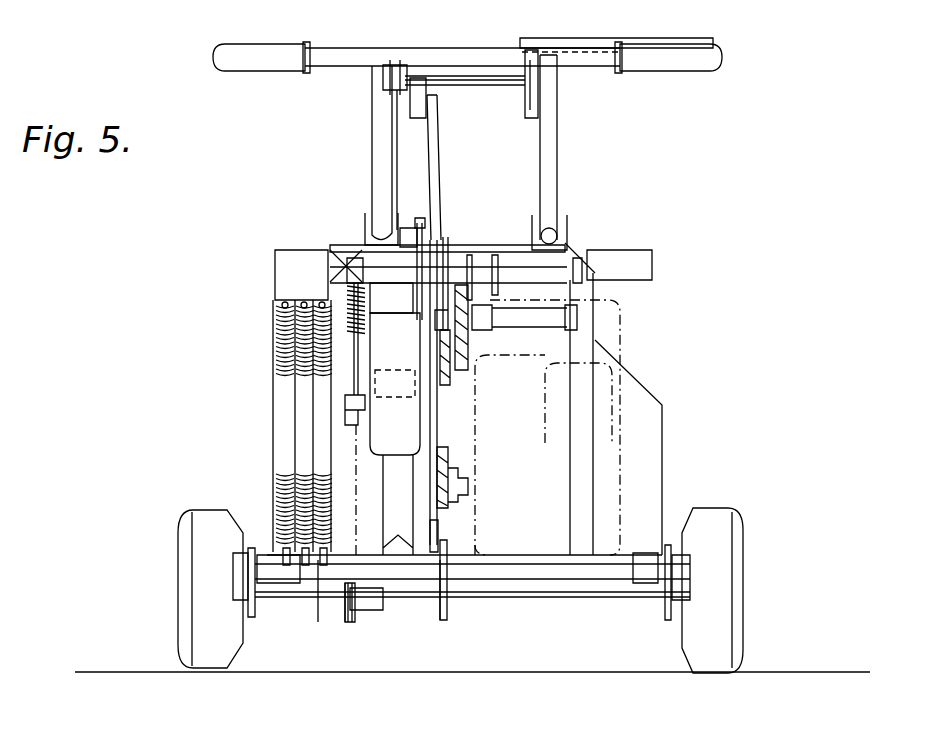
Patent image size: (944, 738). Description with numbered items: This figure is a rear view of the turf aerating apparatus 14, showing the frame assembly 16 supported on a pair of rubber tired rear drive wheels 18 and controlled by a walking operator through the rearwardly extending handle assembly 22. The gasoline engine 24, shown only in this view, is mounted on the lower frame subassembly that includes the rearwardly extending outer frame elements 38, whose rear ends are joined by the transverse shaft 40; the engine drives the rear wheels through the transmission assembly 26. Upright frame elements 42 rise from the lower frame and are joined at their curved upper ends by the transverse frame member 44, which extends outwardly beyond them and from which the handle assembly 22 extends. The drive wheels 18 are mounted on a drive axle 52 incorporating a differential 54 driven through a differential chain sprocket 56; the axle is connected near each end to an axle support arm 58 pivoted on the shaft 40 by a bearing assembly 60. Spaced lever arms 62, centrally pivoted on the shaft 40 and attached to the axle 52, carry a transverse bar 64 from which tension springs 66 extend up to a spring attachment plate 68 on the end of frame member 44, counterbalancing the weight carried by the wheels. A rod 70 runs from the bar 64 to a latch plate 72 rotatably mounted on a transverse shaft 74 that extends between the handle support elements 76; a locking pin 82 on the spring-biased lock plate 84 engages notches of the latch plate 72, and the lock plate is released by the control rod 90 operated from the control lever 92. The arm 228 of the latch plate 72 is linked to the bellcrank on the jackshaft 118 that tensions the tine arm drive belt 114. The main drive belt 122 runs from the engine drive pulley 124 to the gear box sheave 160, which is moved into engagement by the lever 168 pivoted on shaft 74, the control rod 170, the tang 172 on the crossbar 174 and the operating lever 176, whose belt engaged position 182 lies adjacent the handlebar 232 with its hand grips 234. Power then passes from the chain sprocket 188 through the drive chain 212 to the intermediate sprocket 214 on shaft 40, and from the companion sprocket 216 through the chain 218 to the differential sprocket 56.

The turf aerating apparatus 14 is at (680, 403).
The frame assembly 16 is at (575, 478).
The rear drive wheels 18 is at (185, 517).
The handle assembly 22 is at (557, 172).
The gasoline engine 24 is at (522, 416).
The transmission assembly 26 is at (404, 426).
The outer frame elements 38 is at (270, 588).
The transverse shaft 40 is at (530, 582).
The upright frame elements 42 is at (572, 517).
The transverse frame member 44 is at (649, 270).
The drive axle 52 is at (482, 600).
The differential 54 is at (376, 612).
The differential chain sprocket 56 is at (345, 600).
The axle support arm 58 is at (250, 618).
The bearing assembly 60 is at (240, 560).
The lever arms 62 is at (318, 600).
The transverse bar 64 is at (410, 568).
The springs 66 is at (305, 404).
The spring attachment plate 68 is at (275, 272).
The rod 70 is at (440, 537).
The latch plate 72 is at (380, 339).
The transverse shaft 74 is at (365, 282).
The handle support elements 76 is at (333, 250).
The locking pin 82 is at (438, 240).
The lock plate 84 is at (425, 230).
The control rod 90 is at (395, 148).
The control lever 92 is at (385, 80).
The V-belt 114 is at (462, 352).
The jackshaft 118 is at (575, 322).
The main drive belt 122 is at (450, 462).
The engine drive pulley 124 is at (470, 497).
The belt sheave 160 is at (452, 400).
The lever 168 is at (452, 245).
The control rod 170 is at (440, 180).
The tang 172 is at (430, 112).
The crossbar 174 is at (480, 86).
The operating lever 176 is at (522, 115).
The belt engaged position 182 is at (555, 40).
The chain sprocket 188 is at (350, 400).
The drive chain 212 is at (352, 452).
The intermediate sprocket 214 is at (358, 605).
The companion sprocket 216 is at (345, 605).
The chain 218 is at (350, 605).
The arm 228 is at (470, 262).
The handlebar 232 is at (335, 50).
The hand grips 234 is at (240, 48).